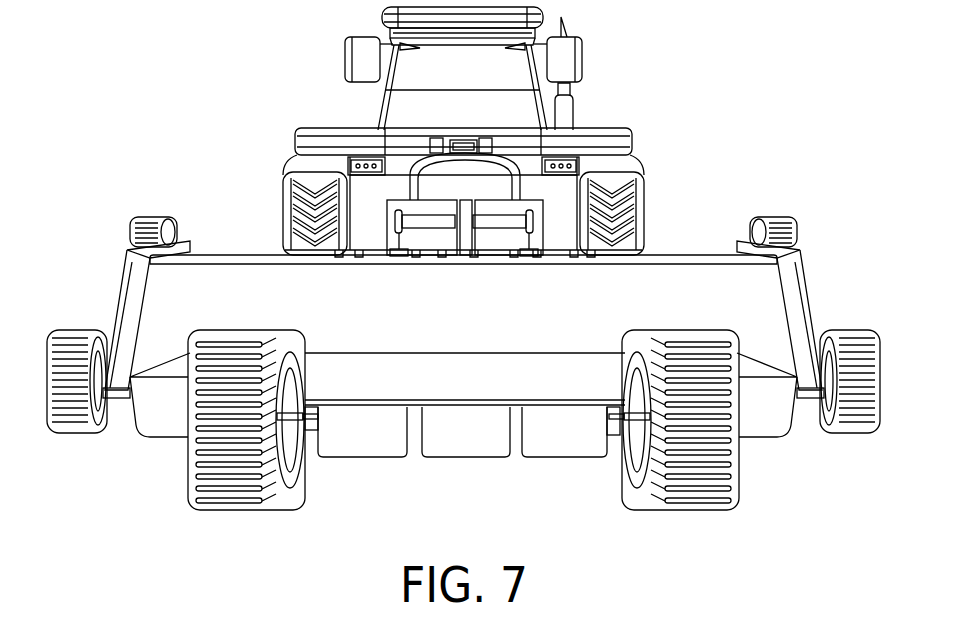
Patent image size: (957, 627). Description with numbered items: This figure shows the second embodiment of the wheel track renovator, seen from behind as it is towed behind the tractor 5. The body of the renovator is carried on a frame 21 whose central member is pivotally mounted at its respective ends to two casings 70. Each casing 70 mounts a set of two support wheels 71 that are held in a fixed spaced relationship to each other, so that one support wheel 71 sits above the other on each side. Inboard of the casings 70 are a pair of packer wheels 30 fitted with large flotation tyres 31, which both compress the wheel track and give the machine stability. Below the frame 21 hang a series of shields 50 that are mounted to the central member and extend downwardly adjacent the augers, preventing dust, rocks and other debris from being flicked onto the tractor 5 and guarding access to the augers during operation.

The tractor 5 is at (596, 137).
The frame 21 is at (700, 282).
The packer wheels 30 is at (693, 488).
The flotation tyres 31 is at (234, 486).
The shields 50 is at (562, 448).
The casings 70 is at (122, 292).
The support wheels 71 is at (150, 222).